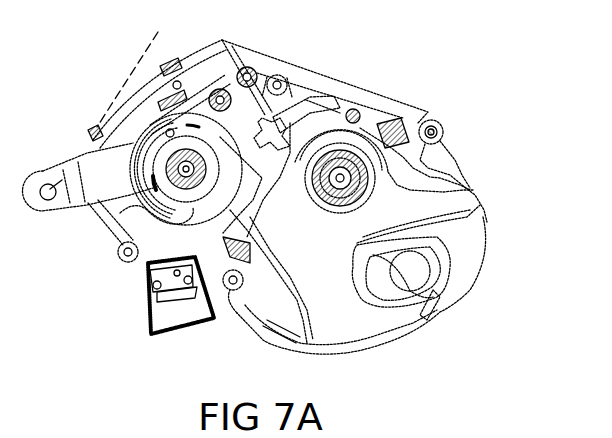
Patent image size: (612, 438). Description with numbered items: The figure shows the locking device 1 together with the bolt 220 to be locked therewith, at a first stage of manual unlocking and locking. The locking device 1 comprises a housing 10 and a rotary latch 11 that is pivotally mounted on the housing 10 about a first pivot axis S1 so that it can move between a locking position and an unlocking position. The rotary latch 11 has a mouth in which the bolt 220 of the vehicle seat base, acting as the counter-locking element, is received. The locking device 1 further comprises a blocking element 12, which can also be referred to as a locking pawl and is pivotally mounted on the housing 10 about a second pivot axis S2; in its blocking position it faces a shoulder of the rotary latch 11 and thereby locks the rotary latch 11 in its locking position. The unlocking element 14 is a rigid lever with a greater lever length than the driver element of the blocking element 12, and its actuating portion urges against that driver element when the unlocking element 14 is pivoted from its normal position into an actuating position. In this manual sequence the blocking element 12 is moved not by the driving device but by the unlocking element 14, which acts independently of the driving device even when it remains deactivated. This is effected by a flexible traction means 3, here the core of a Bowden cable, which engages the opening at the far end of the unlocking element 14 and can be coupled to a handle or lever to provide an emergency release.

The locking device 1 is at (418, 108).
The flexible traction means 3 is at (112, 98).
The housing 10 is at (287, 120).
The rotary latch 11 is at (387, 323).
The blocking element 12 is at (220, 205).
The unlocking element 14 is at (96, 168).
The bolt 220 is at (417, 270).
The pivot axis S1 is at (340, 180).
The pivot axis S2 is at (186, 167).